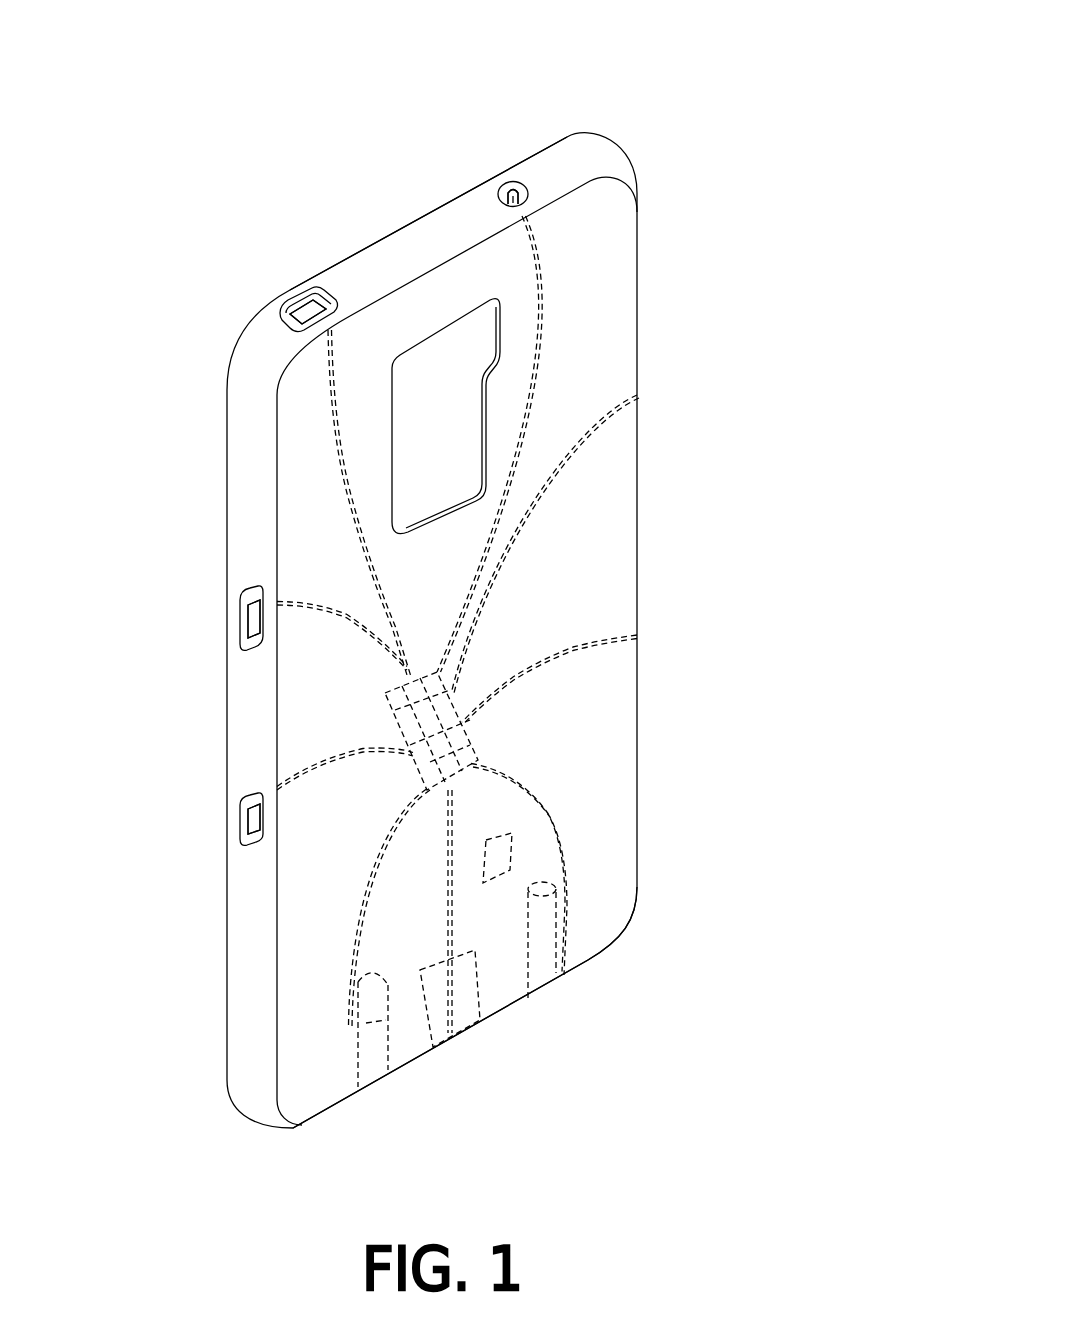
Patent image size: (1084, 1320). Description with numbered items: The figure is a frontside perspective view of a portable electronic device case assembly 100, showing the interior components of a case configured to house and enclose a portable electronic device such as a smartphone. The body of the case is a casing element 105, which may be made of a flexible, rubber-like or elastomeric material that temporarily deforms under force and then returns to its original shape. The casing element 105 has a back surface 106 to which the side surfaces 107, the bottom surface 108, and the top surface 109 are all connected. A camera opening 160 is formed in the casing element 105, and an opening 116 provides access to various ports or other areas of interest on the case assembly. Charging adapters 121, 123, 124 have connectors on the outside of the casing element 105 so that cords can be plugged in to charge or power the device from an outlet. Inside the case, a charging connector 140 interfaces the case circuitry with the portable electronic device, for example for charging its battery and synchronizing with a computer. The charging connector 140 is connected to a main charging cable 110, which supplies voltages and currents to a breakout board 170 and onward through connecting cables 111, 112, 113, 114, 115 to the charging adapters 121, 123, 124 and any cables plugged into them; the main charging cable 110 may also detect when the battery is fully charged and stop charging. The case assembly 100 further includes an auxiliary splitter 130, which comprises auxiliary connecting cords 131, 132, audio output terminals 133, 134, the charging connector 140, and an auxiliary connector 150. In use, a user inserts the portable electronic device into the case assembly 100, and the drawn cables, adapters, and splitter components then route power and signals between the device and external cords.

The portable electronic device case assembly 100 is at (215, 216).
The casing element 105 is at (670, 540).
The back surface 106 is at (592, 228).
The side surfaces 107 is at (233, 750).
The bottom surface 108 is at (413, 1071).
The top surface 109 is at (378, 276).
The main charging cable 110 is at (457, 948).
The connecting cable 111 is at (296, 591).
The connecting cable 112 is at (590, 667).
The connecting cable 113 is at (293, 747).
The connecting cable 114 is at (315, 418).
The connecting cable 115 is at (585, 465).
The opening 116 is at (328, 294).
The charging adapter 121 is at (228, 603).
The charging adapter 123 is at (226, 818).
The charging adapter 124 is at (298, 311).
The auxiliary splitter 130 is at (605, 898).
The auxiliary connecting cord 131 is at (550, 333).
The auxiliary connecting cord 132 is at (340, 958).
The audio output terminal 133 is at (519, 181).
The audio output terminal 134 is at (350, 1037).
The charging connector 140 is at (472, 1040).
The auxiliary connector 150 is at (593, 990).
The camera opening 160 is at (462, 338).
The breakout board 170 is at (487, 753).